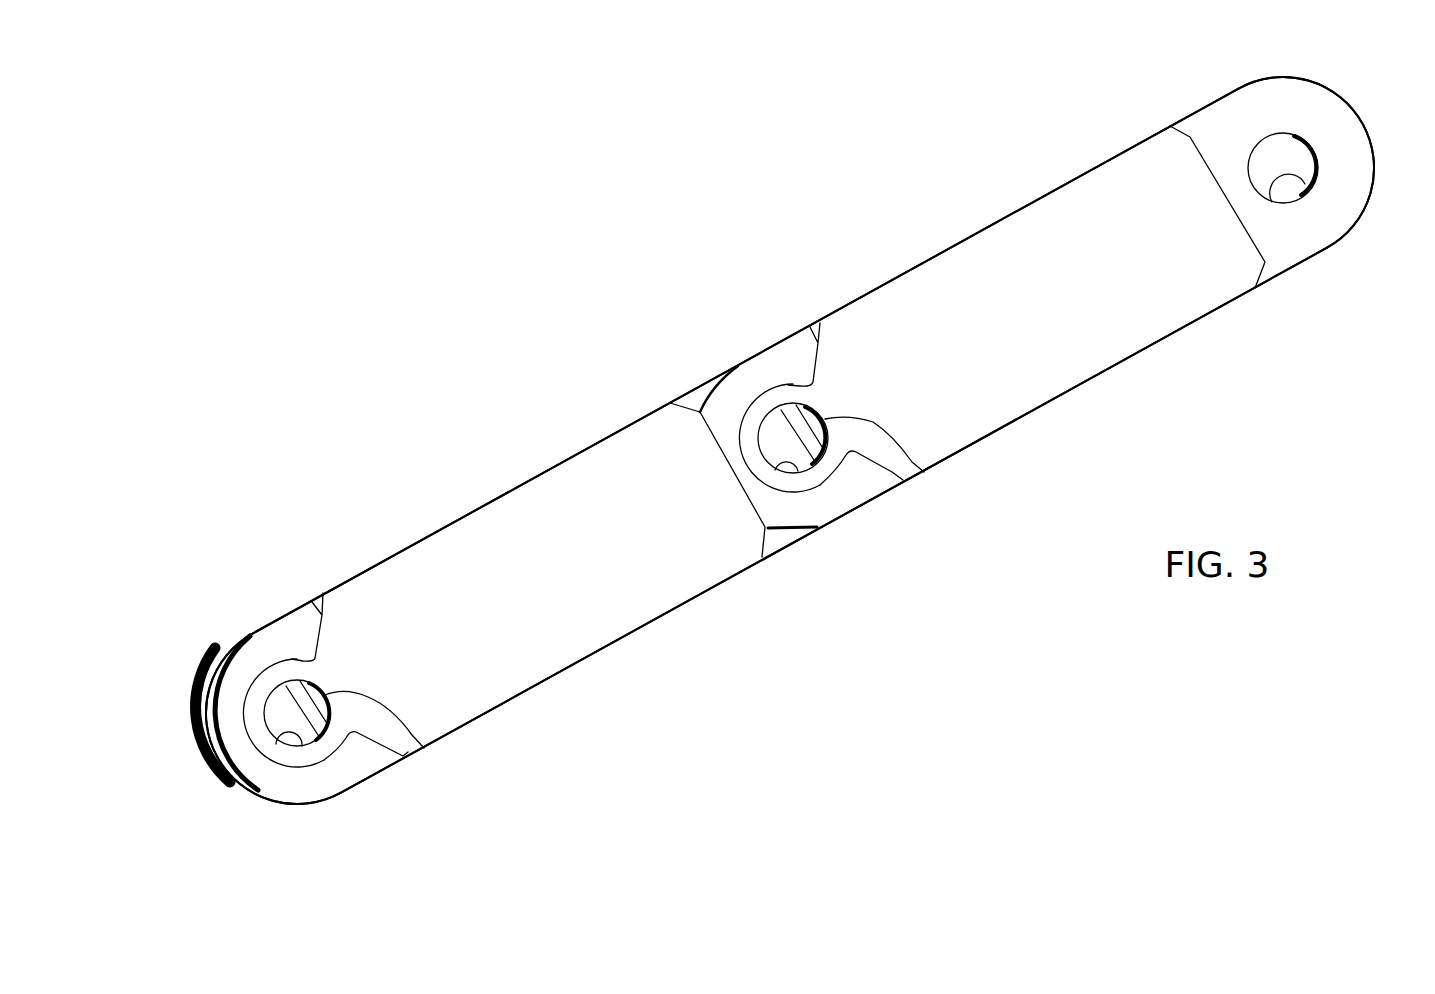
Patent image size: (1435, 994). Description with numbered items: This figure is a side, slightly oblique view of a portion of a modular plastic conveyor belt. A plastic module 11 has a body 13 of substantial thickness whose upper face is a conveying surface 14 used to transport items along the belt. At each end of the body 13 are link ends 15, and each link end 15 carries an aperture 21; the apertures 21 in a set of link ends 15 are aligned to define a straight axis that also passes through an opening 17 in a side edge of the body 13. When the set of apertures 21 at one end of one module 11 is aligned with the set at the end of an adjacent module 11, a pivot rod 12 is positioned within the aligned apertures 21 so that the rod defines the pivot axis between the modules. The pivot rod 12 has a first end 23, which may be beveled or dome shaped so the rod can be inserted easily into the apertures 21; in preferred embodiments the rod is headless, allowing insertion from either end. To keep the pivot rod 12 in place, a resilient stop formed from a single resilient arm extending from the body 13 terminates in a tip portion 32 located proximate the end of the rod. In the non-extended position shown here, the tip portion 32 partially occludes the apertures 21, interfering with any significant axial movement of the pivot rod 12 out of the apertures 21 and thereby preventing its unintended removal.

The plastic module 11 is at (1185, 303).
The pivot rod 12 is at (783, 432).
The body 13 is at (1060, 365).
The conveying surface 14 is at (1008, 212).
The link end 15 is at (1352, 122).
The opening 17 is at (797, 470).
The aperture 21 is at (1318, 182).
The first end of pivot rod 23 is at (768, 440).
The tip portion 32 is at (905, 472).